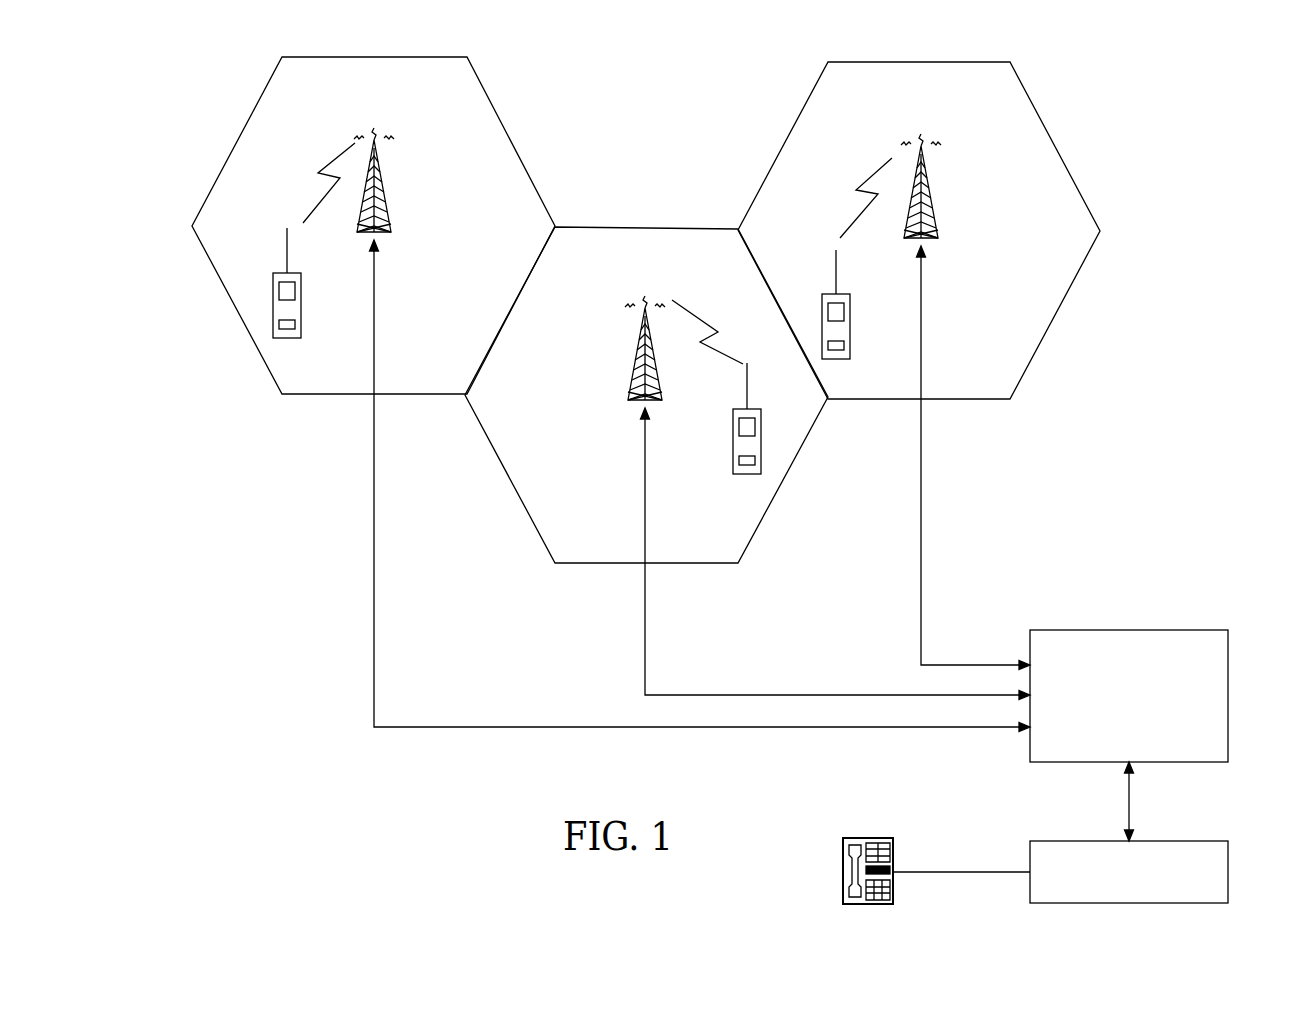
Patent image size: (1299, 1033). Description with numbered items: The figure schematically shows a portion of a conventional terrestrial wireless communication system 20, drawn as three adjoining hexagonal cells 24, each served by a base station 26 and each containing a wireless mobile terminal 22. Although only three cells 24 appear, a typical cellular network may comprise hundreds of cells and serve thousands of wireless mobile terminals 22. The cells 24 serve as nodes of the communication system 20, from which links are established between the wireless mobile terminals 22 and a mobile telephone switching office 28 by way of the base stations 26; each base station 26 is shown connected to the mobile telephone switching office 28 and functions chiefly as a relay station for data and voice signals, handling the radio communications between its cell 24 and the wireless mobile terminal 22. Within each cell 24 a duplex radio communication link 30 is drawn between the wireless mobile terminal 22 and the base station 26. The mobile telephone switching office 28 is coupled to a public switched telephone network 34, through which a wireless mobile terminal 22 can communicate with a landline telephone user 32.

The terrestrial wireless communication system 20 is at (668, 342).
The wireless mobile terminal 22 is at (311, 312).
The cell 24 is at (255, 321).
The base station 26 is at (406, 182).
The mobile telephone switching office 28 is at (1130, 630).
The duplex radio communication link 30 is at (305, 172).
The landline telephone user 32 is at (843, 870).
The public switched telephone network 34 is at (1228, 873).